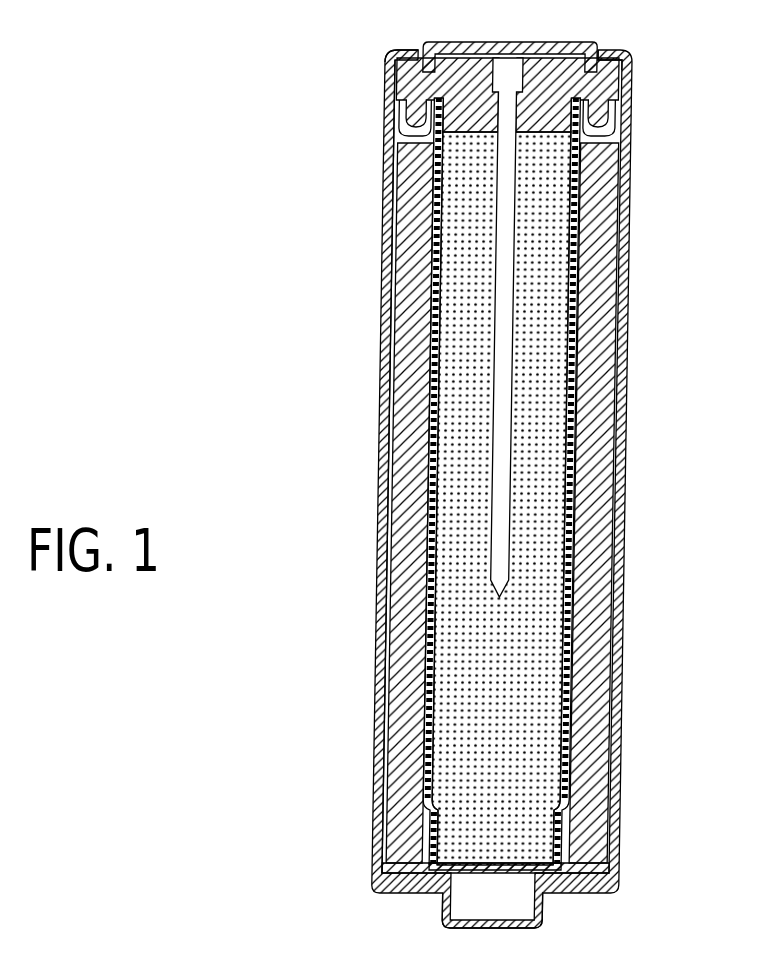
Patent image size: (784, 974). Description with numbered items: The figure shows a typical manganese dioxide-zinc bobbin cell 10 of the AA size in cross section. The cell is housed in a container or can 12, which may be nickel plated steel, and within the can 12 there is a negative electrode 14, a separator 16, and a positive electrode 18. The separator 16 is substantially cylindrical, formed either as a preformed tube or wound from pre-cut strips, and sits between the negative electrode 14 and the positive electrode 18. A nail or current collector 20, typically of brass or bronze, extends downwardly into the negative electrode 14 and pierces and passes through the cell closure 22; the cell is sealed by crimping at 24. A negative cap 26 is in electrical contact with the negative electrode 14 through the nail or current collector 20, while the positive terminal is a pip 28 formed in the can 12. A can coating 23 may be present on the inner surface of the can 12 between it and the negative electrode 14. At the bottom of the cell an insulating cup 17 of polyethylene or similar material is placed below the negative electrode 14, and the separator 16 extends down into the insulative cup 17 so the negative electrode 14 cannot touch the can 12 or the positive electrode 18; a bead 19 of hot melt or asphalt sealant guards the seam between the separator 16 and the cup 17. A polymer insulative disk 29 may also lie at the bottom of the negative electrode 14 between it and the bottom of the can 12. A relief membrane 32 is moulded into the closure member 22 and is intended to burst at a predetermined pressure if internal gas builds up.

The bobbin cell 10 is at (351, 258).
The can 12 is at (386, 452).
The negative electrode 14 is at (559, 730).
The separator 16 is at (434, 610).
The insulating cup 17 is at (438, 848).
The positive electrode 18 is at (596, 491).
The bead 19 is at (460, 890).
The nail or current collector 20 is at (517, 212).
The cell closure 22 is at (623, 87).
The can coating 23 is at (399, 340).
The crimp 24 is at (387, 60).
The negative cap 26 is at (560, 45).
The pip 28 is at (559, 920).
The polymer insulative disk 29 is at (625, 856).
The relief membrane 32 is at (625, 65).